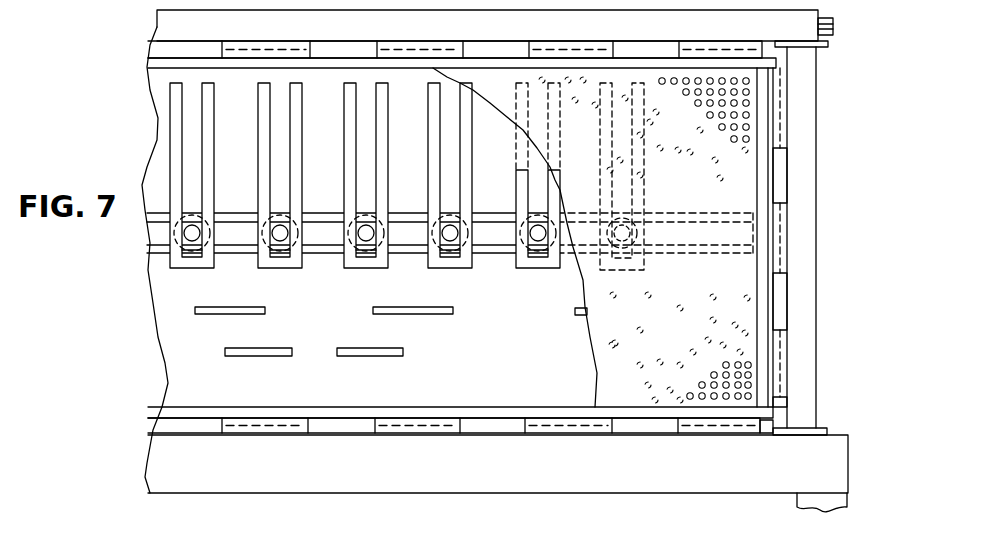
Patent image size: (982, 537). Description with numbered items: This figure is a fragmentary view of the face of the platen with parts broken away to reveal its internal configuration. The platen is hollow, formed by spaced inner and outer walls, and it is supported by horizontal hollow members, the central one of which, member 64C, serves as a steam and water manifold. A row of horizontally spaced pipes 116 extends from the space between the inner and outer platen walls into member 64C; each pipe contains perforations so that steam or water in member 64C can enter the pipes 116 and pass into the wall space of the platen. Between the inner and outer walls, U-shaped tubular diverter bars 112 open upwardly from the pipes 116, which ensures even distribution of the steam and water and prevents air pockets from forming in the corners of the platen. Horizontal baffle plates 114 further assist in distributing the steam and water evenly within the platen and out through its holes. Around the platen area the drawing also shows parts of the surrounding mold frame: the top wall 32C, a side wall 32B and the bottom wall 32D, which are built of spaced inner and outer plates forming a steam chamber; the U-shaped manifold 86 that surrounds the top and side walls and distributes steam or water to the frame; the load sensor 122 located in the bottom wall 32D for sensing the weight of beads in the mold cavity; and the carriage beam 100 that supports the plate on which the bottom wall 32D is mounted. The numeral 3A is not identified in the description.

The U-shaped manifold 86 is at (168, 23).
The top wall 32C is at (492, 60).
The side wall 32B is at (765, 178).
The bottom wall 32D is at (359, 412).
The panel 3A is at (742, 282).
The central member 64C is at (492, 255).
The pipes 116 is at (186, 227).
The U-shaped tubular diverter bars 112 is at (190, 268).
The horizontal baffle plates 114 is at (256, 348).
The load sensor 122 is at (195, 427).
The beam 100 is at (598, 482).